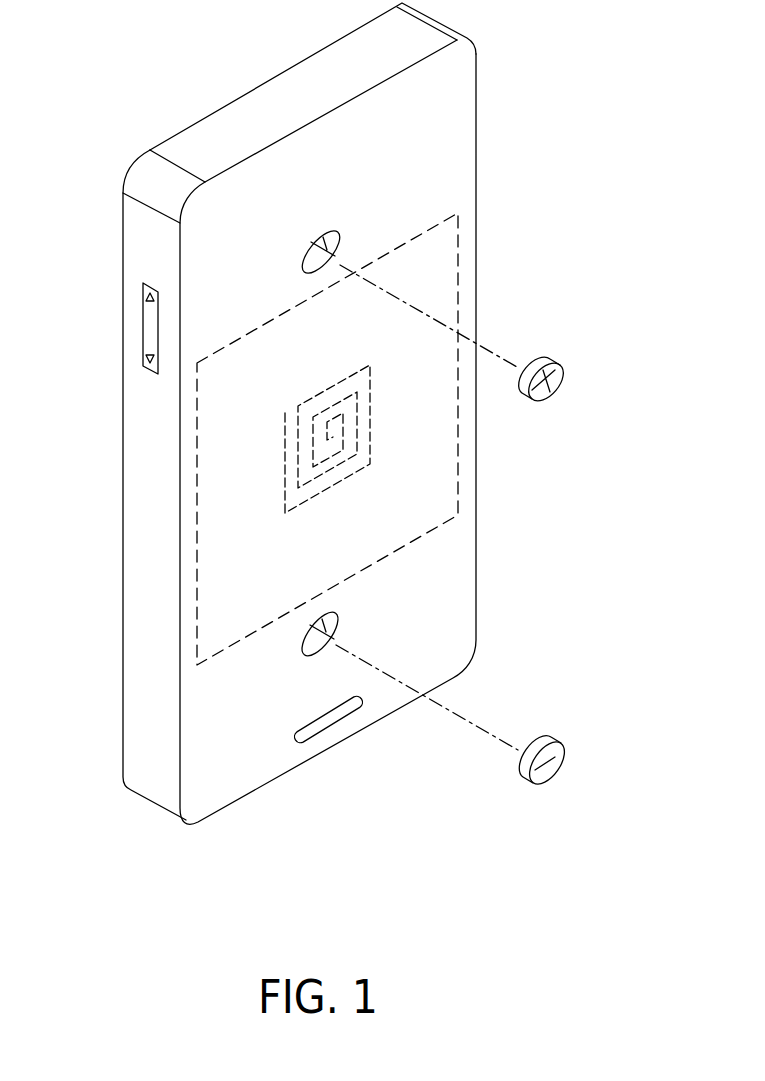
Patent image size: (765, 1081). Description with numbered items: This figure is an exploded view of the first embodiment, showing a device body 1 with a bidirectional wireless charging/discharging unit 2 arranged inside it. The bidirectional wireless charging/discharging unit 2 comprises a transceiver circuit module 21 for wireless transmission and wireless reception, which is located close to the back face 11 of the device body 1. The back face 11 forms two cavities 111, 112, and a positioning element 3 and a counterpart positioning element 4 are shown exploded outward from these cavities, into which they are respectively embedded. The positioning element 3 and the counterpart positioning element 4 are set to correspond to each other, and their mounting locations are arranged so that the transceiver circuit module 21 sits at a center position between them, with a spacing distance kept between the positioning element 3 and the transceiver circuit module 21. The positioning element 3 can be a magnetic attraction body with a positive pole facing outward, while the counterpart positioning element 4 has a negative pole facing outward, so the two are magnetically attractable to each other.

The device body 1 is at (123, 600).
The back face 11 is at (242, 765).
The cavity 111 is at (337, 231).
The cavity 112 is at (337, 611).
The bidirectional wireless charging/discharging unit 2 is at (197, 443).
The transceiver circuit module 21 is at (285, 457).
The positioning element 3 is at (562, 363).
The counterpart positioning element 4 is at (563, 742).